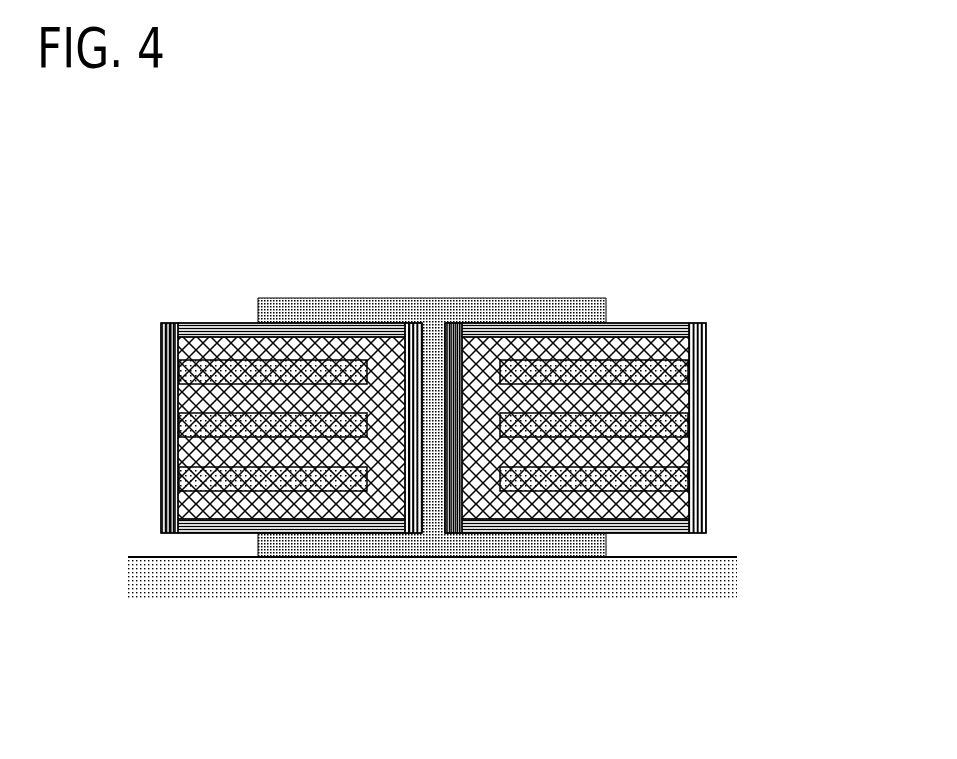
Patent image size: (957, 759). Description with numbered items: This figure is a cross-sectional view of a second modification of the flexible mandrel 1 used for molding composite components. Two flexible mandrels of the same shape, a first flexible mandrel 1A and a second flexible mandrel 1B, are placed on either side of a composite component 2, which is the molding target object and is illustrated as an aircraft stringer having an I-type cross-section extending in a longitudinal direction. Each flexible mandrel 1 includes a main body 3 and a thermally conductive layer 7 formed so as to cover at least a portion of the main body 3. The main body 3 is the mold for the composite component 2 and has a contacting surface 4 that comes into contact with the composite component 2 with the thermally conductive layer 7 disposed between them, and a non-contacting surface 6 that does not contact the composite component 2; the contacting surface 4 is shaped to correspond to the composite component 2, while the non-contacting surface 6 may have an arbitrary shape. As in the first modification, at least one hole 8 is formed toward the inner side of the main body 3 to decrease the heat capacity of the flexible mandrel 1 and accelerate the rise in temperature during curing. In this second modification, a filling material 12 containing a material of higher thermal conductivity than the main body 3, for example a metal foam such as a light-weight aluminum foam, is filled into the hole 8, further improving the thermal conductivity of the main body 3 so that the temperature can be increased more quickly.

The flexible mandrel 1 is at (431, 408).
The first flexible mandrel 1A is at (683, 323).
The second flexible mandrel 1B is at (185, 324).
The composite component 2 is at (535, 298).
The main body 3 is at (222, 508).
The contacting surface 4 is at (365, 323).
The non-contacting surface 6 is at (161, 375).
The thermally conductive layer 7 is at (161, 430).
The filling material 12 is at (431, 429).
The hole 8 is at (190, 480).